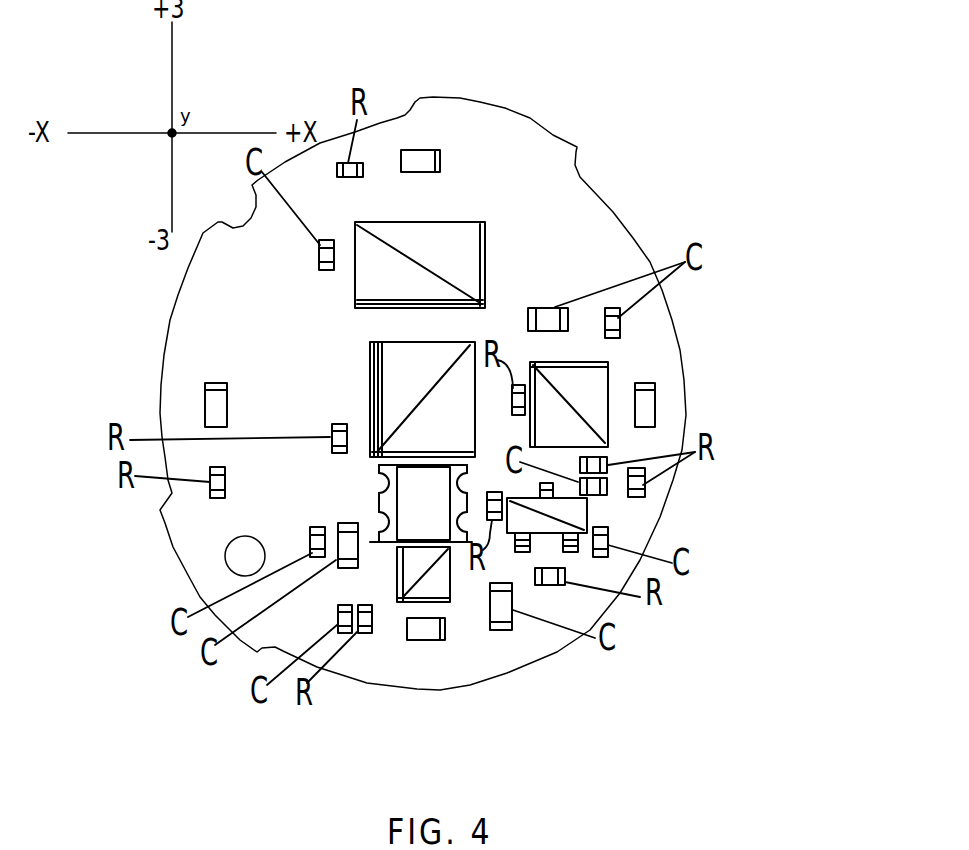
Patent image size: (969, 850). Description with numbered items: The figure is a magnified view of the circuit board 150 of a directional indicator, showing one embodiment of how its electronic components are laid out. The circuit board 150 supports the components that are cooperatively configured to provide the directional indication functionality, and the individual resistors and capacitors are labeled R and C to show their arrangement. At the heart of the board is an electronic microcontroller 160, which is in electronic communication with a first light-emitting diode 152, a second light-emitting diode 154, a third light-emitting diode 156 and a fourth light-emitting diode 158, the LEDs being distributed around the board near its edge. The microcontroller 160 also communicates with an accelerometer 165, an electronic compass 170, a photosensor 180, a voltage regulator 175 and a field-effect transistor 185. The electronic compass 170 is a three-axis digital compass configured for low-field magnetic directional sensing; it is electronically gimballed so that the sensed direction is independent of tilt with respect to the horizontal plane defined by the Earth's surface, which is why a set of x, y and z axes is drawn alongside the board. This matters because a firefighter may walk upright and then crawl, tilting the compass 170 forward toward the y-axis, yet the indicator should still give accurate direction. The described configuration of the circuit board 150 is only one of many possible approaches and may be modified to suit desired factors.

The circuit board 150 is at (818, 77).
The first light-emitting diode 152 is at (428, 148).
The second light-emitting diode 154 is at (656, 403).
The third light-emitting diode 156 is at (427, 640).
The fourth light-emitting diode 158 is at (205, 406).
The electronic microcontroller 160 is at (372, 390).
The accelerometer 165 is at (487, 258).
The electronic compass 170 is at (608, 372).
The voltage regulator 175 is at (450, 603).
The photosensor 180 is at (379, 505).
The field-effect transistor 185 is at (587, 513).